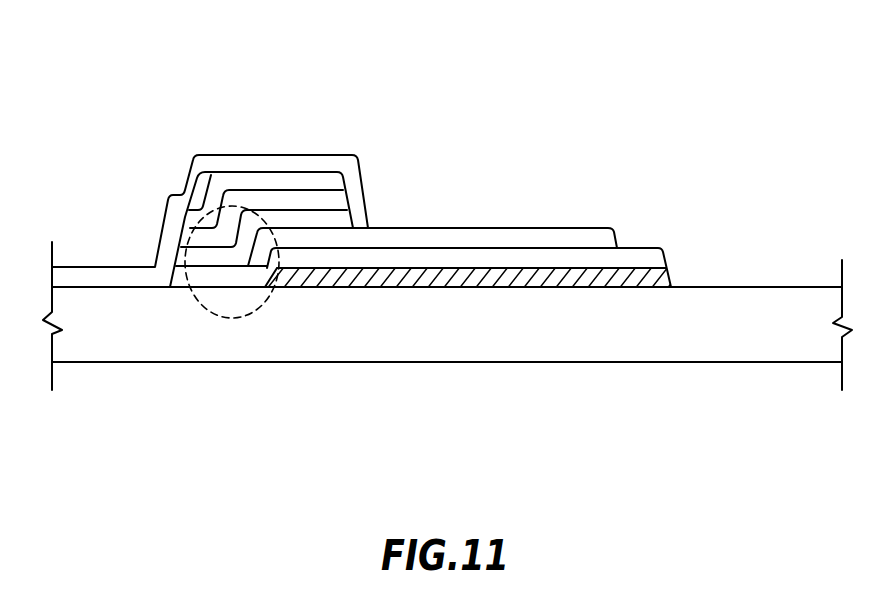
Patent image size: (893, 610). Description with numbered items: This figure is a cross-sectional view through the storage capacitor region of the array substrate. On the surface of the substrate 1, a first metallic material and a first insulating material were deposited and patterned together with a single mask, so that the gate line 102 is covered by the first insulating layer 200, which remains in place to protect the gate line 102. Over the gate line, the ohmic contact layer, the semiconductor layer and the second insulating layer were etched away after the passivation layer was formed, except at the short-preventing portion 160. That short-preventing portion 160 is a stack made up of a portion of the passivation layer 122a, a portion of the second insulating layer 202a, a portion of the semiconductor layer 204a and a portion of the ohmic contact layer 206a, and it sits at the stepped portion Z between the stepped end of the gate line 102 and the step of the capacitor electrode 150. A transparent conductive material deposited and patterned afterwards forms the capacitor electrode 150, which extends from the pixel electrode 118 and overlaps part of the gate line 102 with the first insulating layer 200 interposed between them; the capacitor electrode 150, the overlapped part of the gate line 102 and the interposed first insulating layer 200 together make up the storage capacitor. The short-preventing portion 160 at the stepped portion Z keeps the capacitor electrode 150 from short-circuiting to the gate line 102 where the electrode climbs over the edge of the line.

The substrate 1 is at (683, 345).
The gate line 102 is at (453, 285).
The pixel electrode 118 is at (115, 277).
The portion of the passivation layer 122a is at (228, 182).
The capacitor electrode 150 is at (552, 245).
The short-preventing portion 160 is at (336, 157).
The first insulating layer 200 is at (642, 252).
The portion of the second insulating layer 202a is at (340, 200).
The portion of the semiconductor layer 204a is at (335, 218).
The portion of the ohmic contact layer 206a is at (300, 202).
The stepped portion Z is at (222, 310).